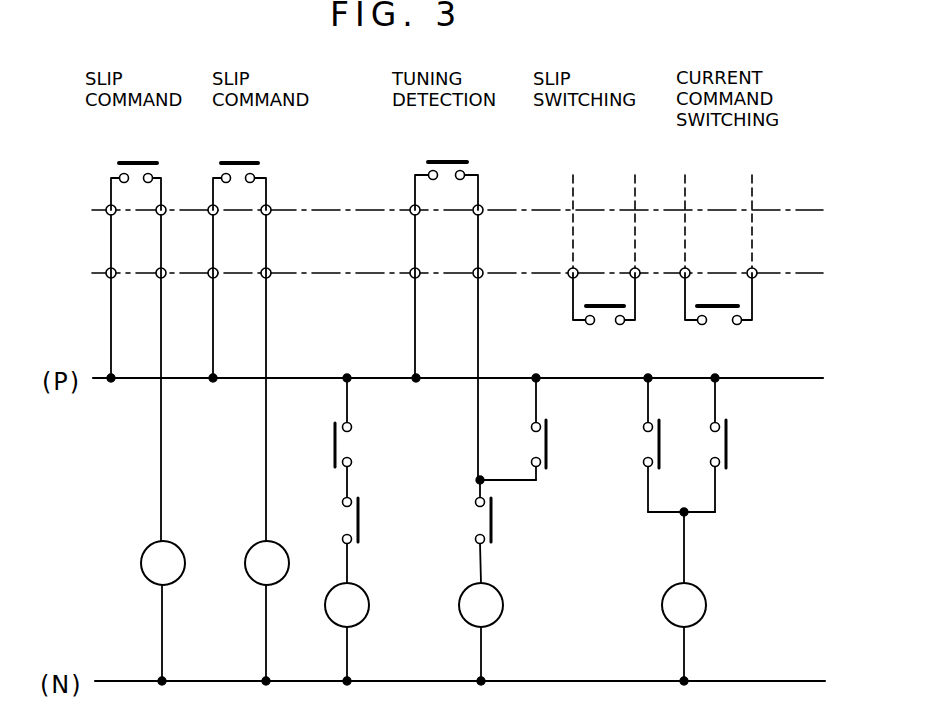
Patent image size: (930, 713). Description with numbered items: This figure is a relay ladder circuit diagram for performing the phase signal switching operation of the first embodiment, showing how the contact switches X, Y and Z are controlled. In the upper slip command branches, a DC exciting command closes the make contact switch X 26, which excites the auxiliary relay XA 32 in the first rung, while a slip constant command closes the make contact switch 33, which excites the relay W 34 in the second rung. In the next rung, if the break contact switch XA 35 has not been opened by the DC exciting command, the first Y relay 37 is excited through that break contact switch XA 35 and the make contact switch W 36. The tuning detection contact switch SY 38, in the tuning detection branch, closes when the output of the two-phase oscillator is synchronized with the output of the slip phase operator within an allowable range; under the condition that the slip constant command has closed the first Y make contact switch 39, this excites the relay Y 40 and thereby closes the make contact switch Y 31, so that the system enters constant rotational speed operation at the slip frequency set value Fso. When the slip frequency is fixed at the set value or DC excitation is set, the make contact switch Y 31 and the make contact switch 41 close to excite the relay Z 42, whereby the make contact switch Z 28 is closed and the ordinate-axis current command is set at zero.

The make contact switch X 26 is at (110, 176).
The make contact switch 33 is at (262, 172).
The tuning detection contact switch SY 38 is at (470, 170).
The make contact switch Y 31 is at (605, 325).
The make contact switch Z 28 is at (722, 318).
The break contact switch XA 35 is at (333, 442).
The make contact switch W 36 is at (362, 503).
The relay Y1 37 is at (369, 598).
The make contact switch Y1 39 is at (488, 543).
The relay Y 40 is at (503, 607).
The make contact switch 41 is at (729, 463).
The relay Z 42 is at (706, 602).
The auxiliary relay XA 32 is at (147, 555).
The relay W 34 is at (250, 550).